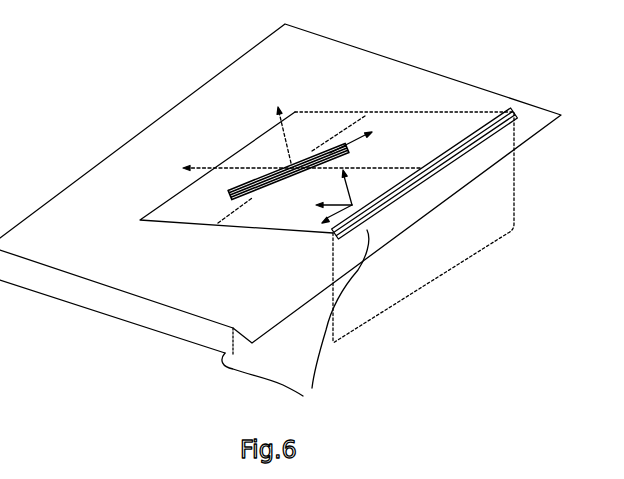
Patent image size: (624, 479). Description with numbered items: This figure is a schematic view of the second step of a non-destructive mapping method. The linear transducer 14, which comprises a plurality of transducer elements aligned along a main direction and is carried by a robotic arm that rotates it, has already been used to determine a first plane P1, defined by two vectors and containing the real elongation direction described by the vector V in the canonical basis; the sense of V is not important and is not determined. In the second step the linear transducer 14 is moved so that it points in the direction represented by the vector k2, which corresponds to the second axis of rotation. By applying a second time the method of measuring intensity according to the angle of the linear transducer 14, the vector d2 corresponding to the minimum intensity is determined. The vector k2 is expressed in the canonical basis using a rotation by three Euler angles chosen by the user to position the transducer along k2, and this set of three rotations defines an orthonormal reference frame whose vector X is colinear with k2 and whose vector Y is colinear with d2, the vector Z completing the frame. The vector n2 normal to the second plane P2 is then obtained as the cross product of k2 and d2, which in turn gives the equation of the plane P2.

The linear transducer 14 is at (295, 320).
The first plane P1 is at (280, 189).
The second plane P2 is at (328, 225).
The normal vector to plane P2 n2 is at (269, 126).
The pointing direction vector k2 is at (287, 170).
The minimum intensity vector d2 is at (291, 169).
The elongation direction vector V is at (360, 139).
The X vector of orthonormal reference frame X is at (325, 199).
The Y vector of orthonormal reference frame Y is at (329, 216).
The Z vector of orthonormal reference frame Z is at (351, 187).